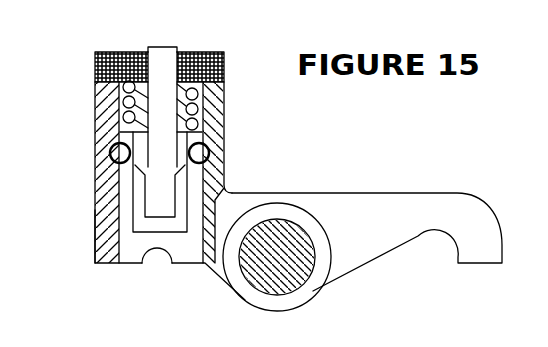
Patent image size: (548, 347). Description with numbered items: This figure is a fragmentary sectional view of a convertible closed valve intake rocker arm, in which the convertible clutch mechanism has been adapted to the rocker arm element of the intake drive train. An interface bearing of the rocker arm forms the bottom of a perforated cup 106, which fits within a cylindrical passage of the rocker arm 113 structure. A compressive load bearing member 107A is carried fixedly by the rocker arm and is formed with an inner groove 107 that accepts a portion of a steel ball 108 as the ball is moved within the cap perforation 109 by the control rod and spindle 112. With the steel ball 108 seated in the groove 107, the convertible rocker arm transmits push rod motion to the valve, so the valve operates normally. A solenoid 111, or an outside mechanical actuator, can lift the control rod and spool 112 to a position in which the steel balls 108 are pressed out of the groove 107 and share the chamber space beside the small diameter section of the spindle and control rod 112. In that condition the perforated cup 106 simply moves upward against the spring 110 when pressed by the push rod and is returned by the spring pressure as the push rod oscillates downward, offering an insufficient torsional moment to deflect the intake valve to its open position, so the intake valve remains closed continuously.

The perforated cup 106 is at (180, 263).
The inner groove 107 is at (104, 164).
The compressive load bearing member 107A is at (92, 225).
The steel ball 108 is at (120, 150).
The cap perforation 109 is at (120, 138).
The spring 110 is at (103, 82).
The solenoid 111 is at (113, 50).
The control rod and spindle 112 is at (180, 45).
The rocker arm 113 is at (298, 218).